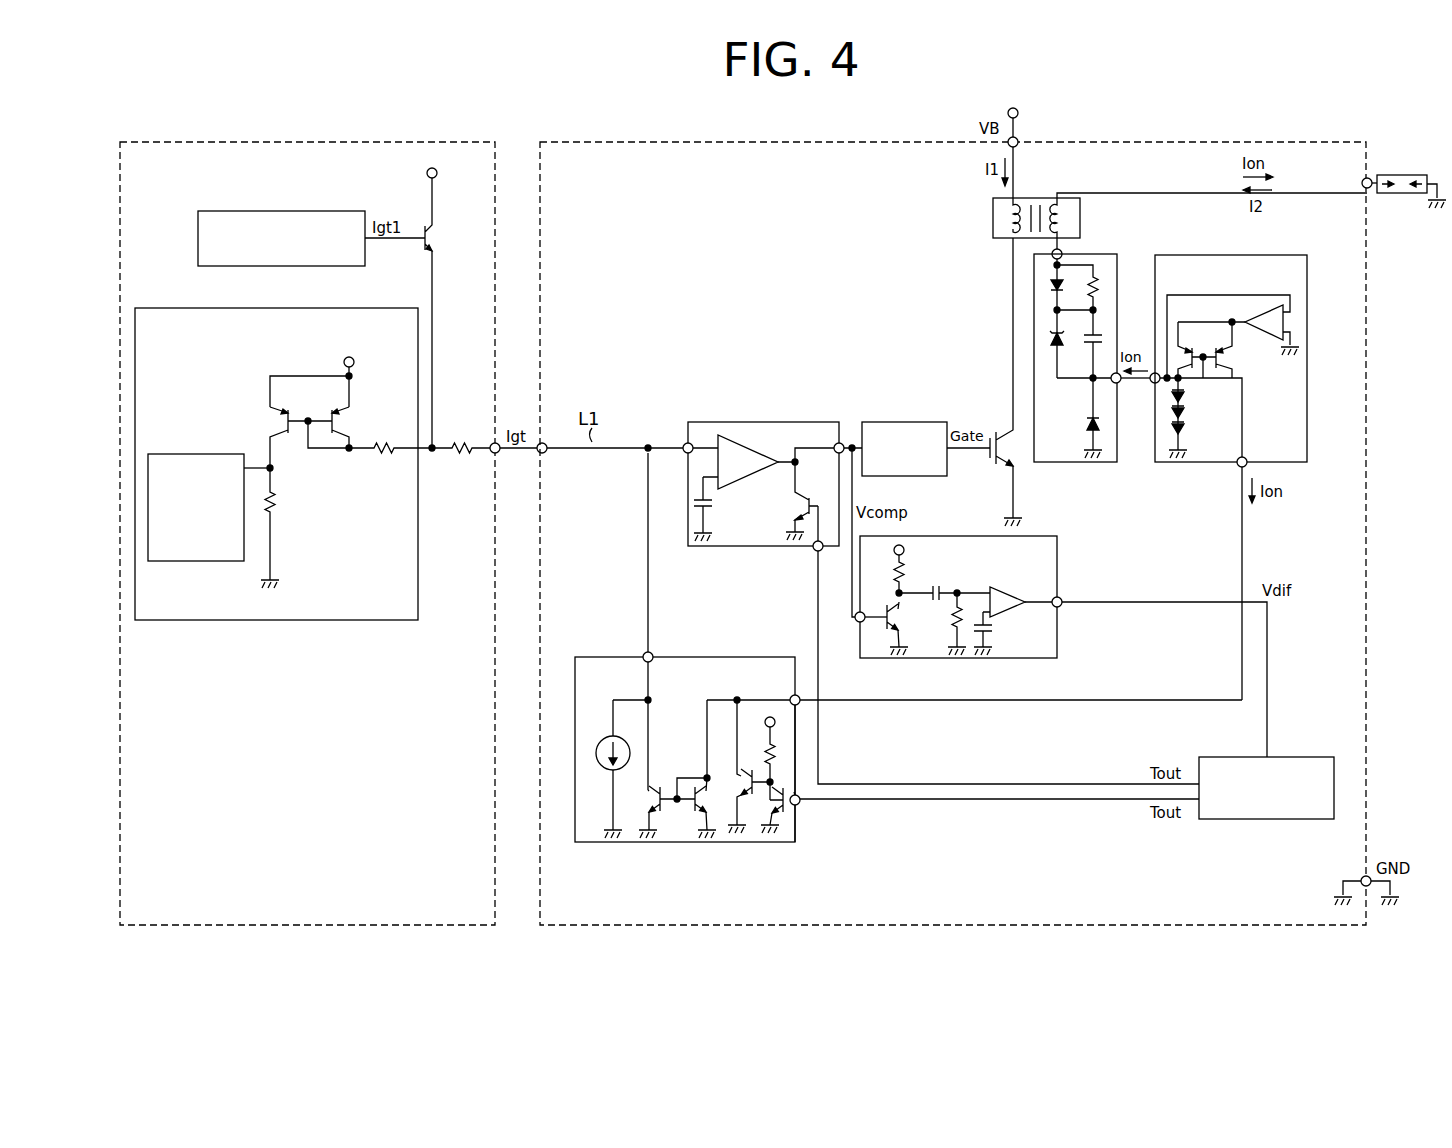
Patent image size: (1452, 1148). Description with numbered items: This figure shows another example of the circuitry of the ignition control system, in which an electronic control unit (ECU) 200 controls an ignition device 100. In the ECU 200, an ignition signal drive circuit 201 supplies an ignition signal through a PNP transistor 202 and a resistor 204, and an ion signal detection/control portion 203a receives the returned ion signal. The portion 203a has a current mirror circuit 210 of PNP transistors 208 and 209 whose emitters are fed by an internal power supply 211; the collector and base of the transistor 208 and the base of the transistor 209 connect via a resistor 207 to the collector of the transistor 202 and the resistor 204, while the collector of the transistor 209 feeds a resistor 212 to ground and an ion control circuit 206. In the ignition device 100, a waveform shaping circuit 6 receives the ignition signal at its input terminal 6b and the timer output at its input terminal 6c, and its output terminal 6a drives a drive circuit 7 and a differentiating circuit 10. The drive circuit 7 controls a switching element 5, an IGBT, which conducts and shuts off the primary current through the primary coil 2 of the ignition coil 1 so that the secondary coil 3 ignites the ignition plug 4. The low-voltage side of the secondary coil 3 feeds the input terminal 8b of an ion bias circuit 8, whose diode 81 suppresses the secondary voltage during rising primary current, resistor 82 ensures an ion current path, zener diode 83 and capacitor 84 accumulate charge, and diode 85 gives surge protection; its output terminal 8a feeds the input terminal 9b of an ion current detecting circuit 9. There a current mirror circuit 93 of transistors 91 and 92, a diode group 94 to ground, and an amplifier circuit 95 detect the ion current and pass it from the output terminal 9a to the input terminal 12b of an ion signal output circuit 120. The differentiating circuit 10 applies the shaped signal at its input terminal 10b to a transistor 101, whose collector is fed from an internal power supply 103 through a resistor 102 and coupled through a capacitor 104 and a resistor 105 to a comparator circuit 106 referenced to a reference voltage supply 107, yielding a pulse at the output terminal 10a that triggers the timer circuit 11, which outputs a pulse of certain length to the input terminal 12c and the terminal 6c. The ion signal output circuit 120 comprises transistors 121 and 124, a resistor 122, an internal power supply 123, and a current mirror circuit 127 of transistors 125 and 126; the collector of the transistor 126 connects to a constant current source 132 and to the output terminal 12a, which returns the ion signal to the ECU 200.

The electronic control unit (ECU) 200 is at (300, 142).
The ignition device 100 is at (670, 142).
The ignition signal drive circuit 201 is at (305, 211).
The PNP transistor 202 is at (435, 245).
The ion signal detection/control portion 203a is at (345, 308).
The resistor 204 is at (462, 440).
The ion control circuit 206 is at (183, 454).
The resistor 207 is at (384, 456).
The transistor 208 is at (344, 422).
The transistor 209 is at (280, 424).
The current mirror circuit 210 is at (291, 405).
The internal power supply 211 is at (355, 365).
The resistor 212 is at (276, 504).
The ignition coil 1 is at (993, 206).
The primary coil 2 is at (1004, 224).
The secondary coil 3 is at (1062, 198).
The ignition plug 4 is at (1400, 175).
The switching element 5 is at (1005, 428).
The ignition signal waveform shaping circuit 6 is at (696, 422).
The output terminal 6a is at (843, 443).
The input terminal 6b is at (684, 444).
The input terminal 6c is at (813, 552).
The drive circuit 7 is at (900, 422).
The ion bias circuit 8 is at (1112, 254).
The output terminal 8a is at (1121, 384).
The input terminal 8b is at (1062, 252).
The diode 81 is at (1050, 286).
The resistor 82 is at (1063, 288).
The zener diode 83 is at (1050, 338).
The capacitor 84 is at (1085, 340).
The diode 85 is at (1088, 440).
The ion current detecting circuit 9 is at (1290, 255).
The output terminal 9a is at (1238, 468).
The input terminal 9b is at (1152, 372).
The transistor 91 is at (1186, 344).
The transistor 92 is at (1226, 356).
The current mirror circuit 93 is at (1192, 348).
The diode group 94 is at (1190, 388).
The amplifier circuit 95 is at (1256, 312).
The differentiating circuit 10 is at (976, 536).
The output terminal 10a is at (1062, 598).
The input terminal 10b is at (856, 622).
The transistor 101 is at (896, 628).
The resistor 102 is at (895, 572).
The internal power supply 103 is at (904, 550).
The capacitor 104 is at (940, 591).
The resistor 105 is at (960, 634).
The comparator circuit 106 is at (1006, 589).
The reference voltage supply 107 is at (990, 632).
The timer circuit 11 is at (1270, 819).
The ion signal output circuit 120 is at (725, 657).
The output terminal 12a is at (652, 653).
The input terminal 12b is at (797, 695).
The input terminal 12c is at (801, 806).
The transistor 121 is at (788, 812).
The resistor 122 is at (776, 760).
The internal power supply 123 is at (776, 722).
The transistor 124 is at (744, 802).
The transistor 125 is at (708, 810).
The transistor 126 is at (652, 810).
The current mirror circuit 127 is at (664, 829).
The constant current source 132 is at (599, 762).